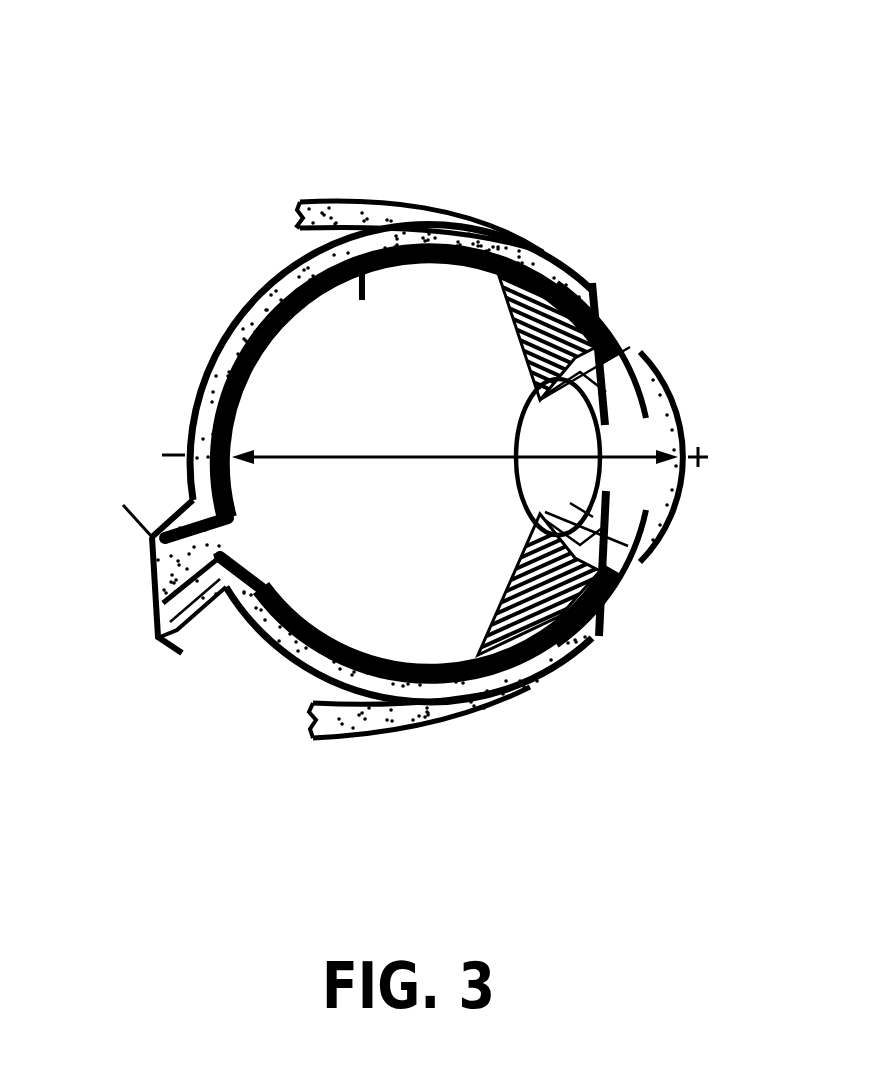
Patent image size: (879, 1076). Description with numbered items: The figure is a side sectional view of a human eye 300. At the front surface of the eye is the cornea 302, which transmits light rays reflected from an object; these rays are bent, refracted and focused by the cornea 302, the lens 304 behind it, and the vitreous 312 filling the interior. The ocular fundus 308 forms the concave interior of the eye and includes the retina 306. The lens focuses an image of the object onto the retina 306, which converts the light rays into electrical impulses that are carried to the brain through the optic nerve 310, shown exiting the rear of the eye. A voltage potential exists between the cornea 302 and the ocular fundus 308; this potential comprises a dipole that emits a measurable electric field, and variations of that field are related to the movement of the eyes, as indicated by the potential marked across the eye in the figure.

The human eye 300 is at (170, 102).
The cornea 302 is at (660, 373).
The lens 304 is at (612, 530).
The retina 306 is at (240, 317).
The ocular fundus 308 is at (197, 483).
The optic nerve 310 is at (153, 580).
The vitreous 312 is at (383, 250).